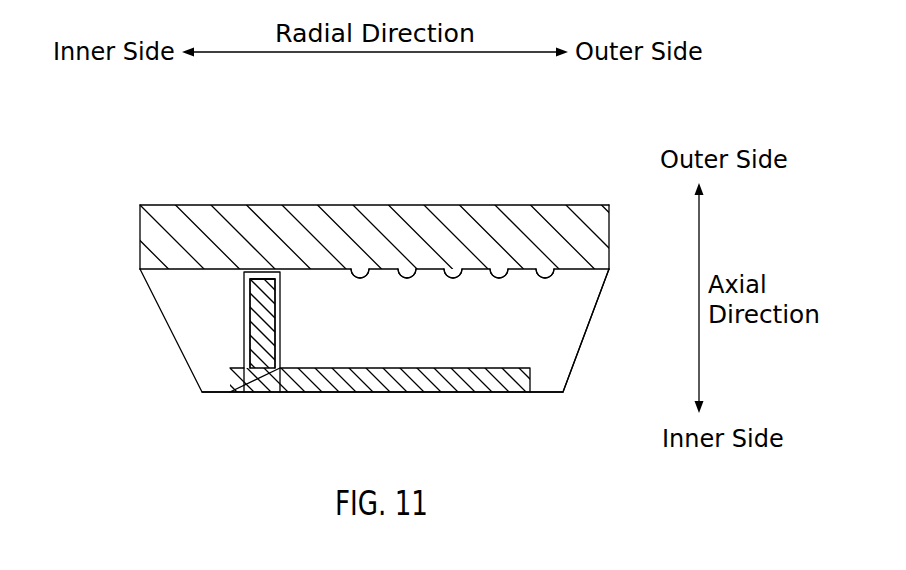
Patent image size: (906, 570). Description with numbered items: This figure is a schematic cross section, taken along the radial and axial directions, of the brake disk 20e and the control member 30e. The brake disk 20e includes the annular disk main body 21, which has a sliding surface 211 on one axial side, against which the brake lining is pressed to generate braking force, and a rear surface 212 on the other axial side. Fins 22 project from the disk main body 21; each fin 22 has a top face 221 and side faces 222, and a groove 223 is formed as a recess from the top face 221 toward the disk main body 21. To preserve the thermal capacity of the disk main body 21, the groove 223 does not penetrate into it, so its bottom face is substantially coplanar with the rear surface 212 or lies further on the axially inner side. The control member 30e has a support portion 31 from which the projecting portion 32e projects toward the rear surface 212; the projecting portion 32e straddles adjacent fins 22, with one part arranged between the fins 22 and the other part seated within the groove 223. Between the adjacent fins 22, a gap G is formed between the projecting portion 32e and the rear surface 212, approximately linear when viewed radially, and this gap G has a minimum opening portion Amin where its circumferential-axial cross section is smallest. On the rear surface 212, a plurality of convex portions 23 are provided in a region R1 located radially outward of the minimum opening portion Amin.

The brake disk 20e is at (374, 295).
The disk main body 21 is at (385, 297).
The sliding surface 211 is at (398, 204).
The rear surface 212 is at (343, 272).
The fin 22 is at (370, 314).
The top face 221 is at (550, 392).
The side face 222 is at (545, 317).
The groove 223 is at (250, 322).
The convex portion 23 is at (360, 278).
The control member 30e is at (334, 319).
The support portion 31 is at (472, 392).
The projecting portion 32e is at (244, 346).
The gap G is at (251, 268).
The minimum opening portion Amin is at (263, 432).
The region R1 is at (608, 123).